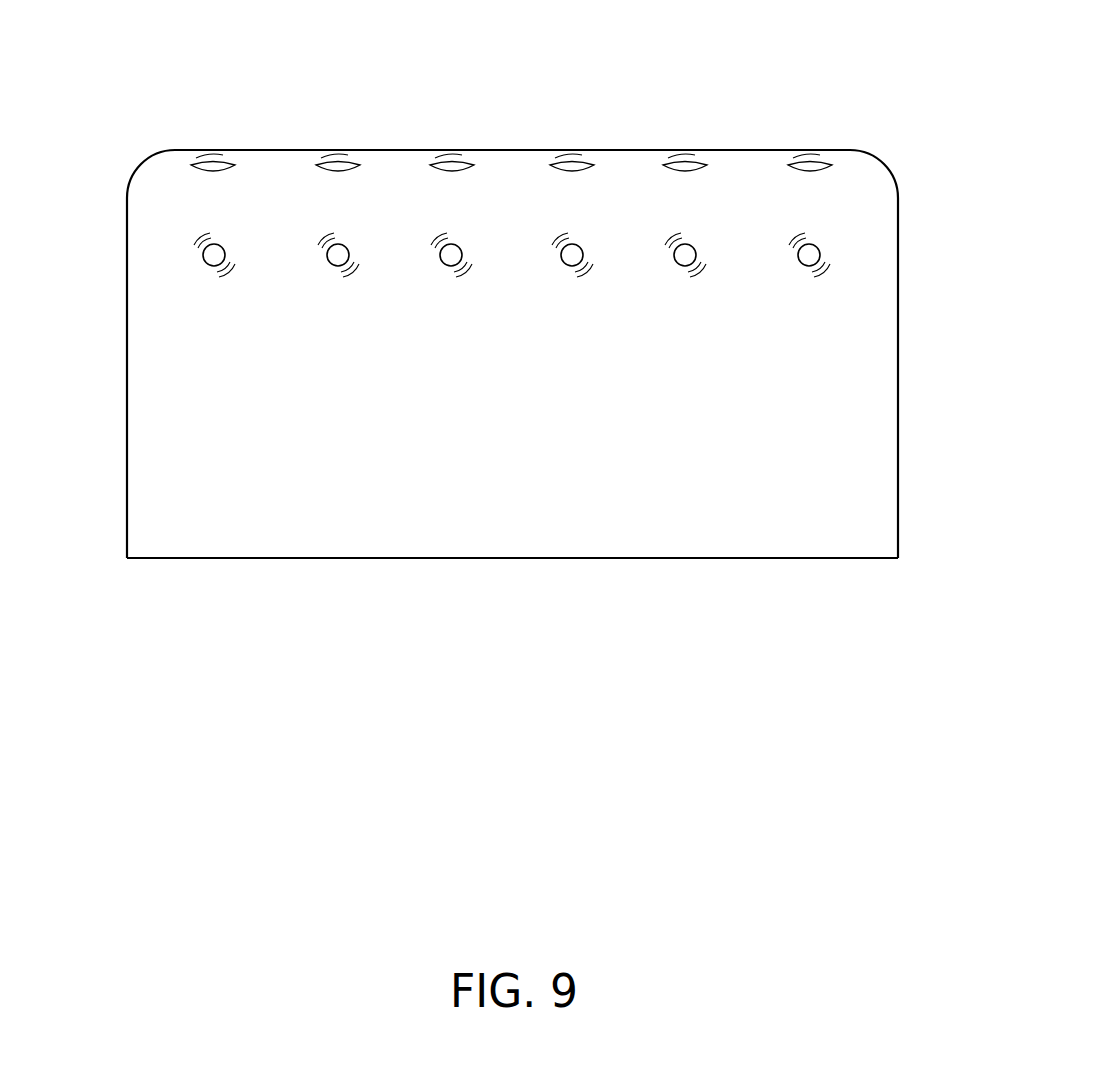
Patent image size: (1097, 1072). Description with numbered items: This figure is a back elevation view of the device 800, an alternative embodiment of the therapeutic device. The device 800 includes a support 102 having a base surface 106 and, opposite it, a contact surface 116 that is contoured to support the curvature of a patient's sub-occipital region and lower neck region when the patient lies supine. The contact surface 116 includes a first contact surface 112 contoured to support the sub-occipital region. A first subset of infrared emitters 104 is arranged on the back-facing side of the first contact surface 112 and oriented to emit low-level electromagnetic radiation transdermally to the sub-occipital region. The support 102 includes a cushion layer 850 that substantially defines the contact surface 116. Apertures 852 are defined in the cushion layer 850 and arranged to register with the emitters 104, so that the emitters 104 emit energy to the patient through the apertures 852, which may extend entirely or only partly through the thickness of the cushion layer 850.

The device 800 is at (732, 82).
The support 102 is at (117, 402).
The infrared emitters 104 is at (345, 248).
The base surface 106 is at (467, 560).
The first contact surface 112 is at (178, 149).
The contact surface 116 is at (867, 207).
The cushion layer 850 is at (878, 312).
The apertures 852 is at (322, 158).